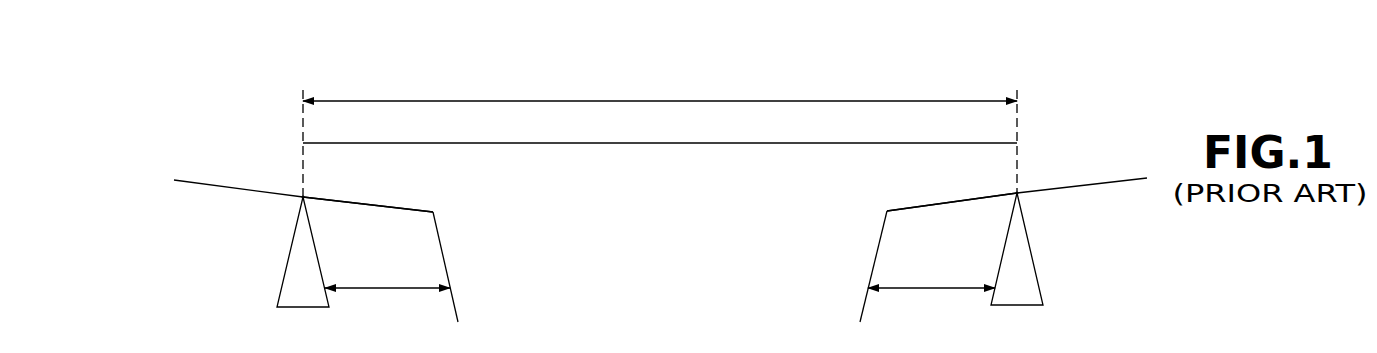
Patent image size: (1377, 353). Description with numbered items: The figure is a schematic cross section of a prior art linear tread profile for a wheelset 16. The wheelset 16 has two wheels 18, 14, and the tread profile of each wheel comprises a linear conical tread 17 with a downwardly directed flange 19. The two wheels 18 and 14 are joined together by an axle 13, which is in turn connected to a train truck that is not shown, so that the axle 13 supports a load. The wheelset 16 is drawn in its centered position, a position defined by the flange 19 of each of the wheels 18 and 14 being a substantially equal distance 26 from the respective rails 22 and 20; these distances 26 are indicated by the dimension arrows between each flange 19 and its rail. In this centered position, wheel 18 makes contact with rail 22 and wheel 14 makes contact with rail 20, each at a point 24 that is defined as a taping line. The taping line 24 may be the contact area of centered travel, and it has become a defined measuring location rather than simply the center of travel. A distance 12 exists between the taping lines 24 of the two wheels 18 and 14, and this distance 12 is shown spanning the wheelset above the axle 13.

The distance between taping lines 12 is at (617, 100).
The axle 13 is at (617, 144).
The wheel 14 is at (1083, 185).
The wheelset 16 is at (824, 68).
The linear conical tread 17 is at (390, 203).
The wheel 18 is at (237, 188).
The flange 19 is at (443, 245).
The rail 20 is at (1037, 258).
The rail 22 is at (288, 262).
The taping line 24 is at (307, 195).
The distance from rail 26 is at (390, 292).